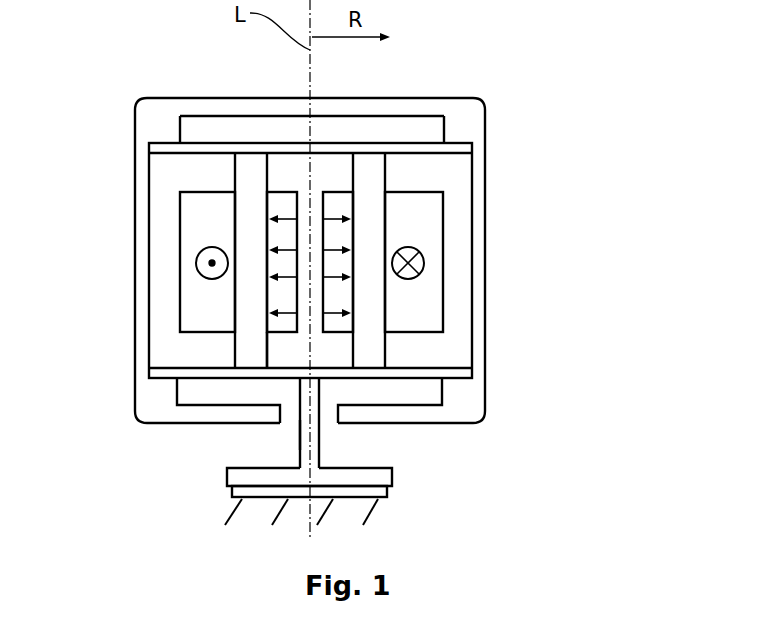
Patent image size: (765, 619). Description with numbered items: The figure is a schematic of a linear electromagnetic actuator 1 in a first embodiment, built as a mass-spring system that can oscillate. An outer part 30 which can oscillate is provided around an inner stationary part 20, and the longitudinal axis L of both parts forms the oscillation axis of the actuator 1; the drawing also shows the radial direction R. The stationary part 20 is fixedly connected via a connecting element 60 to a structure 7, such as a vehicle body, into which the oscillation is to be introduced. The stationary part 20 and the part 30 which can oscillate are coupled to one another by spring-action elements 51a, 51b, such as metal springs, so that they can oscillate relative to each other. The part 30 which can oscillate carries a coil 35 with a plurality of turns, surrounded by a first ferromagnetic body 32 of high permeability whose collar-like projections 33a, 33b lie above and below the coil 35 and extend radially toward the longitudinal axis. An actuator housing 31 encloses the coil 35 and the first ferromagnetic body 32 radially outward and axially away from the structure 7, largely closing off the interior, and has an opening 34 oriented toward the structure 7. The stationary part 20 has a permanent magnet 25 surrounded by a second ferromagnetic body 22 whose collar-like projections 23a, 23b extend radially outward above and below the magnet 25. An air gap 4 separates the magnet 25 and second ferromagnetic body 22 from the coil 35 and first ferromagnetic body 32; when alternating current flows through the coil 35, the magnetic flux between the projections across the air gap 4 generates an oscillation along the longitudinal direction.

The actuator 1 is at (530, 18).
The air gap 4 is at (463, 128).
The structure 7 is at (230, 493).
The stationary part 20 is at (250, 186).
The second ferromagnetic body 22 is at (365, 168).
The collar-like projection 23a is at (279, 170).
The collar-like projection 23b is at (290, 352).
The permanent magnet 25 is at (292, 295).
The part which can oscillate 30 is at (548, 280).
The actuator housing 31 is at (465, 120).
The first ferromagnetic body 32 is at (458, 220).
The collar-like projection 33a is at (427, 183).
The collar-like projection 33b is at (408, 347).
The opening 34 is at (330, 418).
The coil 35 is at (410, 293).
The spring-action element 51a is at (207, 150).
The spring-action element 51b is at (197, 378).
The connecting element 60 is at (303, 435).